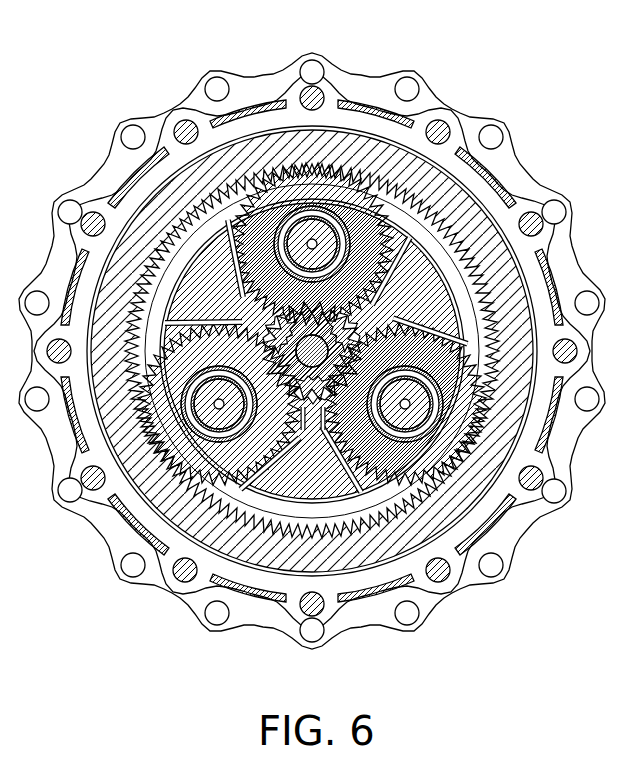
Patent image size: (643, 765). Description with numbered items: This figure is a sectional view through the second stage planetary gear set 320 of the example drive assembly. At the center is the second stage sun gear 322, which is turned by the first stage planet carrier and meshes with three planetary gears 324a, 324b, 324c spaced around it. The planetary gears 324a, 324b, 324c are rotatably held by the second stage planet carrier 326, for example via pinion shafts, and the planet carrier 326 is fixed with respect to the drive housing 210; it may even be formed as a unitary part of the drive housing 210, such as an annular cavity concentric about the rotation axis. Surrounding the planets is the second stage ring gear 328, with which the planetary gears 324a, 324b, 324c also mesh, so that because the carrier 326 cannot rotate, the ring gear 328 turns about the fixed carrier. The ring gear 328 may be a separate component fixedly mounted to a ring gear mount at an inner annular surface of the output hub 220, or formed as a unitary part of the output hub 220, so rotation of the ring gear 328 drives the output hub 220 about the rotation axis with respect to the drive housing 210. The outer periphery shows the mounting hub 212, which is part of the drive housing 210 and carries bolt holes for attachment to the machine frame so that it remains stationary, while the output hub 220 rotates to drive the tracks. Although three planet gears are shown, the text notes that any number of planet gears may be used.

The second stage planetary gear set 320 is at (322, 346).
The mounting hub 212 is at (392, 74).
The output hub 220 is at (534, 200).
The second stage ring gear 328 is at (403, 517).
The drive housing 210 is at (337, 490).
The planetary gear 324a is at (474, 441).
The planetary gear 324b is at (283, 185).
The planetary gear 324c is at (185, 468).
The second stage planet carrier 326 is at (420, 402).
The second stage sun gear 322 is at (330, 338).